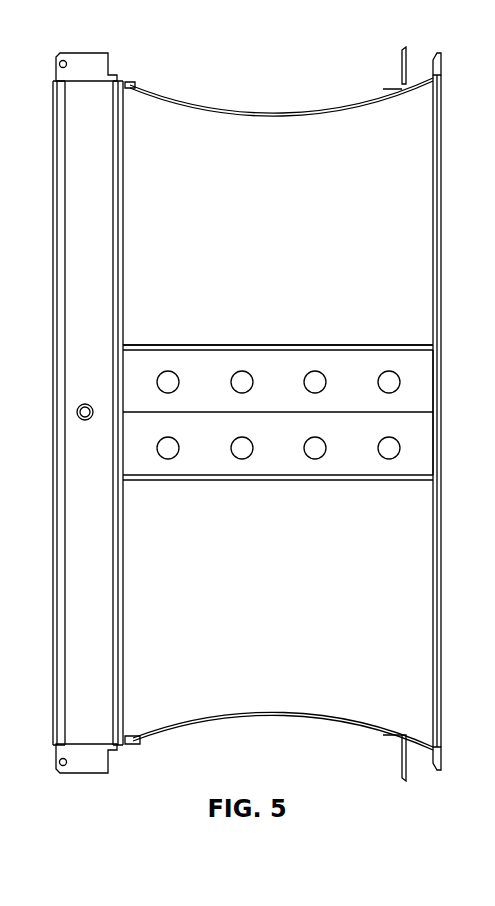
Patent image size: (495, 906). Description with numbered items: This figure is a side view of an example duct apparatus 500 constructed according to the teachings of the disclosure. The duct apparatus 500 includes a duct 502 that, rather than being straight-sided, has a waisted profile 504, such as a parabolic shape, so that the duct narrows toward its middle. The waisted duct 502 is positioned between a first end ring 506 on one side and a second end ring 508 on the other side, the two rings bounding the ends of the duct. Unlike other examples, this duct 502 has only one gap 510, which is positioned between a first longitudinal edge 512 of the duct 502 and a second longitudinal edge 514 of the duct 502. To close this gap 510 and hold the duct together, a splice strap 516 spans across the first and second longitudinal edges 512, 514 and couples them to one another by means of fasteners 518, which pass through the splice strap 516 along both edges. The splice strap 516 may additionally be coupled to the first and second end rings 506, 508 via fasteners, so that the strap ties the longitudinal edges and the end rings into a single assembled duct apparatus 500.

The duct apparatus 500 is at (288, 64).
The duct 502 is at (175, 115).
The waisted profile 504 is at (273, 133).
The first end ring 506 is at (93, 230).
The second end ring 508 is at (438, 242).
The gap 510 is at (398, 347).
The first longitudinal edge 512 is at (290, 345).
The second longitudinal edge 514 is at (305, 480).
The splice strap 516 is at (415, 395).
The fasteners 518 is at (168, 370).